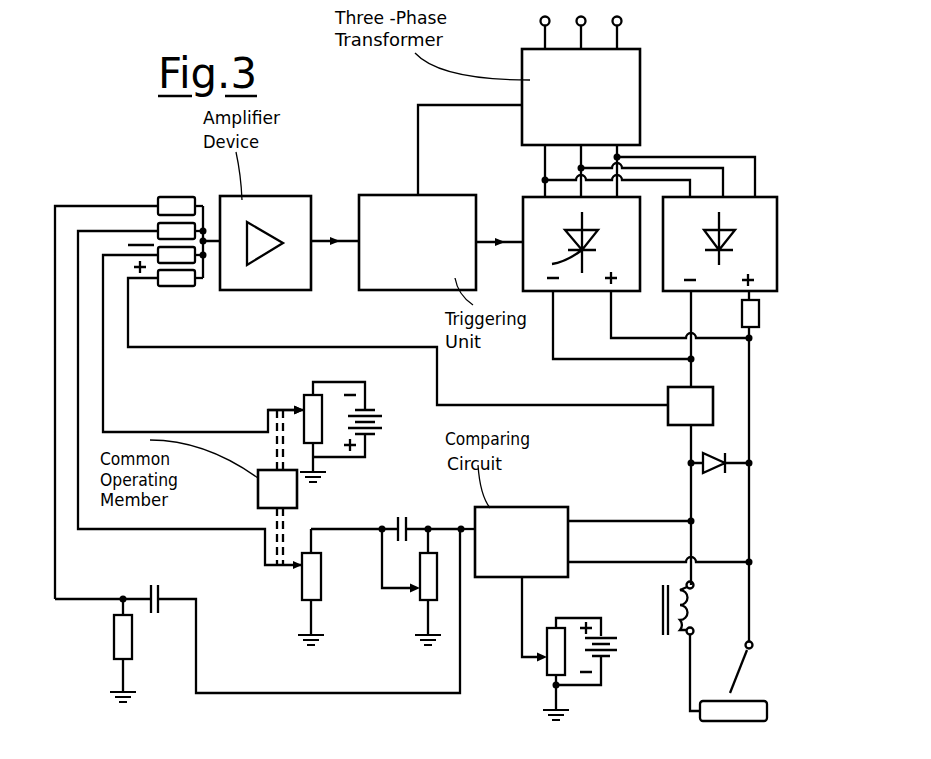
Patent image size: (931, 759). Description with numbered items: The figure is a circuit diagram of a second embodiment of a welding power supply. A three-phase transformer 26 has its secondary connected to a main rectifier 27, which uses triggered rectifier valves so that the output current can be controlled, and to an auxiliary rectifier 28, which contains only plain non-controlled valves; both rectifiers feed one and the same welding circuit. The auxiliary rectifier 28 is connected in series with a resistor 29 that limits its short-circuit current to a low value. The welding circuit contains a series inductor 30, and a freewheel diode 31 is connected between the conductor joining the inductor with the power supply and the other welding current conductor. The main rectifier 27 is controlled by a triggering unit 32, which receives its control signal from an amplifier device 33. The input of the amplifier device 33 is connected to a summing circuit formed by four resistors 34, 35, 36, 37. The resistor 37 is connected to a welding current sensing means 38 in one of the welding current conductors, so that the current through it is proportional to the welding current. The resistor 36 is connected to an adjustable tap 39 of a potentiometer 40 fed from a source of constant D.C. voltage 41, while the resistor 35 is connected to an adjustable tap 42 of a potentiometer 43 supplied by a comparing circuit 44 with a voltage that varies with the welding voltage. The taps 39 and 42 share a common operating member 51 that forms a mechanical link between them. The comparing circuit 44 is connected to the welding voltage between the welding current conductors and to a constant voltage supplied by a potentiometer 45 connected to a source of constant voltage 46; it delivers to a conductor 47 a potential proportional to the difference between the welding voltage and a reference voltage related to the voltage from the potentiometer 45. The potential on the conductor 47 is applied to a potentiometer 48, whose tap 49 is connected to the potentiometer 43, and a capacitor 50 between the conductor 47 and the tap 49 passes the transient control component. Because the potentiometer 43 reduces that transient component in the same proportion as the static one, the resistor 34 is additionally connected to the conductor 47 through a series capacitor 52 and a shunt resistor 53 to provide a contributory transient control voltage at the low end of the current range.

The three-phase transformer 26 is at (636, 94).
The main rectifier 27 is at (527, 197).
The auxiliary rectifier 28 is at (740, 197).
The resistor 29 is at (756, 316).
The series inductor 30 is at (661, 598).
The freewheel diode 31 is at (705, 466).
The triggering unit 32 is at (383, 197).
The amplifier device 33 is at (280, 196).
The resistor 34 is at (186, 203).
The resistor 35 is at (172, 233).
The resistor 36 is at (173, 256).
The resistor 37 is at (182, 279).
The welding current sensing means 38 is at (678, 418).
The adjustable tap 39 is at (298, 405).
The potentiometer 40 is at (312, 403).
The source of constant D.C. voltage 41 is at (378, 420).
The adjustable tap 42 is at (302, 568).
The potentiometer 43 is at (305, 598).
The comparing circuit 44 is at (525, 508).
The potentiometer 45 is at (548, 665).
The source of constant voltage 46 is at (612, 652).
The conductor 47 is at (447, 525).
The potentiometer 48 is at (422, 600).
The tap 49 is at (407, 590).
The capacitor 50 is at (395, 518).
The common operating member 51 is at (258, 486).
The series capacitor 52 is at (152, 584).
The shunt resistor 53 is at (113, 632).